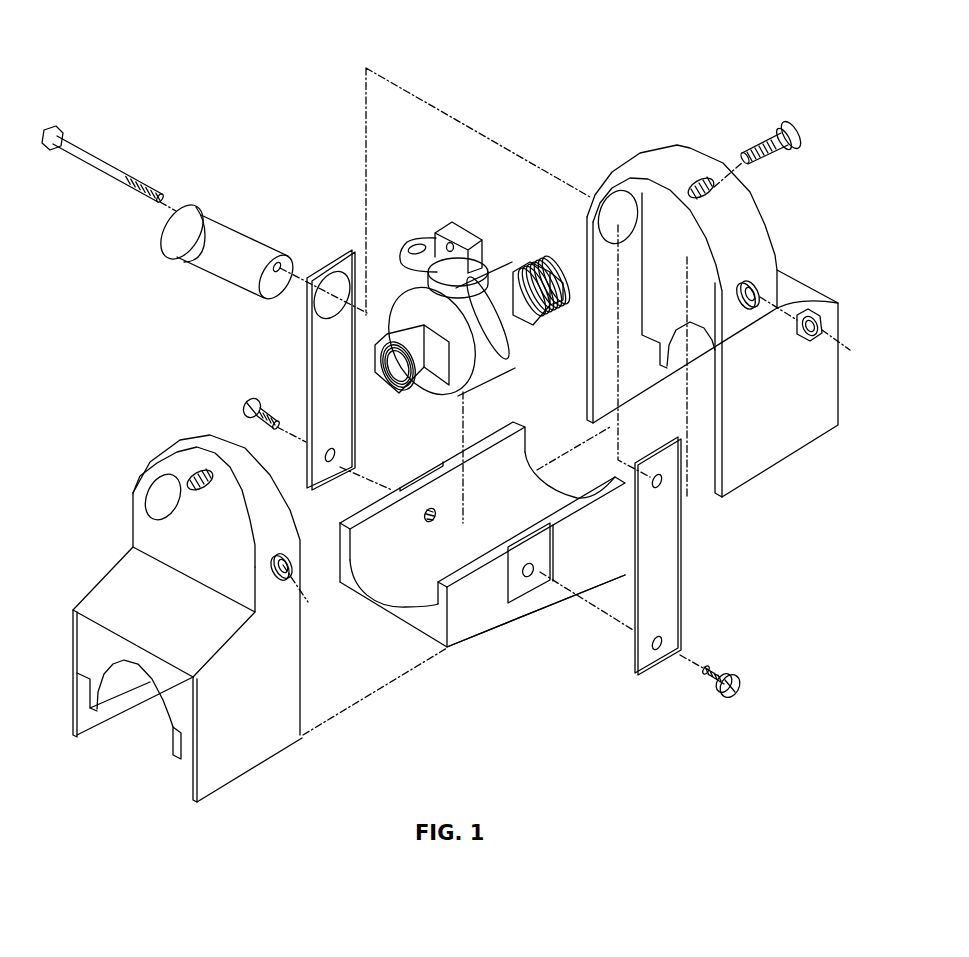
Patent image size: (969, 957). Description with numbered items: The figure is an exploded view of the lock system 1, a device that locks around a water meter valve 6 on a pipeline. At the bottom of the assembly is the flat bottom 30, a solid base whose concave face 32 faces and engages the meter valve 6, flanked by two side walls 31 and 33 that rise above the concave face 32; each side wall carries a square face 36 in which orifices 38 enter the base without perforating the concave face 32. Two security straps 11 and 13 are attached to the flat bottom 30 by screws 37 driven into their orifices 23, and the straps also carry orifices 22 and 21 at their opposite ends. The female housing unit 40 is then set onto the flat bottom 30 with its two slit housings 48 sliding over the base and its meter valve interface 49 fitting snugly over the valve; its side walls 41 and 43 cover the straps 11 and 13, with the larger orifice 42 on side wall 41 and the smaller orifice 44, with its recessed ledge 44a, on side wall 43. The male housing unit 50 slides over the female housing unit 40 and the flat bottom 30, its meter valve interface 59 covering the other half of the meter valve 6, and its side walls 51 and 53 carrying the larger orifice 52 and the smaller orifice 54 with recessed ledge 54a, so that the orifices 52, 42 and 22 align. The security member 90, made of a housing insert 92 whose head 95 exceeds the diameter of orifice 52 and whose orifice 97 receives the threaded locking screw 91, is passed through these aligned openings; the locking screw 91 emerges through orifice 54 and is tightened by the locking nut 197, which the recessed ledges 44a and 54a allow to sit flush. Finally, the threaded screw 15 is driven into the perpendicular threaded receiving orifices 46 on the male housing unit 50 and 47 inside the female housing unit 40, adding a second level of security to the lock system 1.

The lock system 1 is at (261, 44).
The meter valve 6 is at (498, 355).
The security strap 11 is at (343, 420).
The security strap 13 is at (667, 548).
The threaded screw 15 is at (793, 123).
The orifice 21 is at (662, 487).
The orifice 22 is at (308, 307).
The orifice 23 is at (337, 457).
The flat bottom 30 is at (415, 630).
The side wall 31 is at (475, 617).
The concave face 32 is at (410, 588).
The side wall 33 is at (340, 550).
The square face 36 is at (425, 473).
The screw 37 is at (248, 405).
The orifice 38 is at (423, 515).
The female housing unit 40 is at (73, 630).
The side wall 41 is at (88, 582).
The orifice 42 is at (147, 492).
The side wall 43 is at (253, 745).
The orifice 44 is at (290, 568).
The recessed ledge 44a is at (306, 600).
The threaded receiving orifice 46 is at (715, 186).
The threaded receiving orifice 47 is at (197, 473).
The slit housing 48 is at (185, 740).
The meter valve interface 49 is at (133, 665).
The male housing unit 50 is at (688, 143).
The side wall 51 is at (585, 255).
The orifice 52 is at (608, 188).
The side wall 53 is at (783, 443).
The orifice 54 is at (758, 290).
The recessed ledge 54a is at (760, 287).
The meter valve interface 59 is at (700, 327).
The security member 90 is at (231, 220).
The locking screw 91 is at (50, 130).
The housing insert 92 is at (207, 270).
The head 95 is at (197, 201).
The orifice 97 is at (281, 264).
The locking nut 197 is at (823, 320).